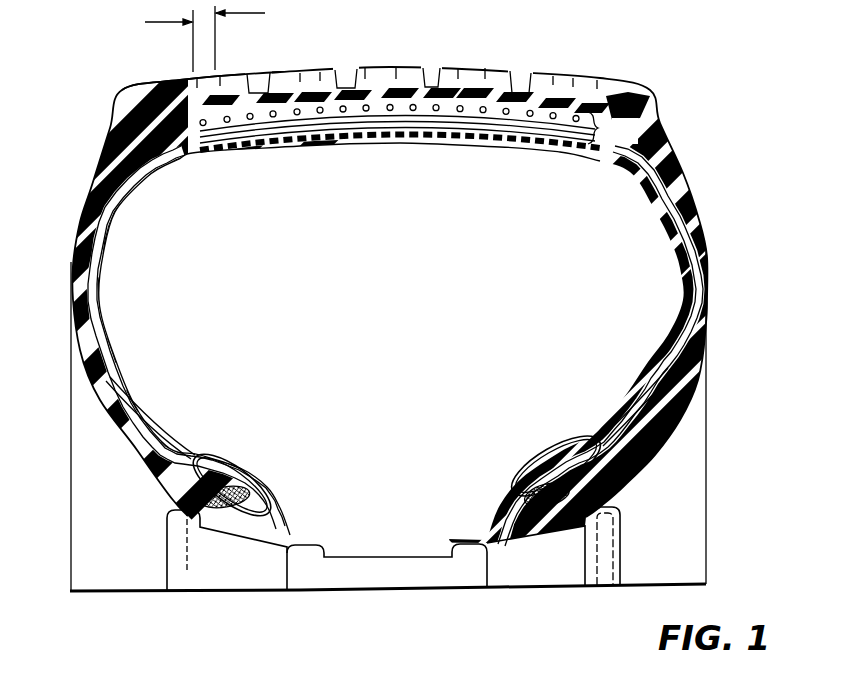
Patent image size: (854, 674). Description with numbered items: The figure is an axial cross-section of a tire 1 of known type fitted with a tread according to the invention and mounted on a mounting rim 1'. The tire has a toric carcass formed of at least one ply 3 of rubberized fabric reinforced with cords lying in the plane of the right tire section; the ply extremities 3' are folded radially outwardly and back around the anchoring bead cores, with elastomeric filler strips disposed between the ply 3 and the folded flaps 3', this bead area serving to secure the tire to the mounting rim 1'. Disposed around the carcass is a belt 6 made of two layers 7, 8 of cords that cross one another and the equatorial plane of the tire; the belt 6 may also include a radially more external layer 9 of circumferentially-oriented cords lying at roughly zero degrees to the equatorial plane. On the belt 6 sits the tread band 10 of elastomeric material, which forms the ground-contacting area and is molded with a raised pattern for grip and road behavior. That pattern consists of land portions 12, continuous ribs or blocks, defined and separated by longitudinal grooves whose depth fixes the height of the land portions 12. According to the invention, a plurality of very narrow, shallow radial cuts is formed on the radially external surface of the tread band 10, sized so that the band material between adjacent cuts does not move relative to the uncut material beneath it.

The tire 1 is at (389, 275).
The mounting rim 1' is at (388, 570).
The ply 3 is at (417, 344).
The ply extremities 3' is at (389, 413).
The belt 6 is at (628, 118).
The belt layer 7 is at (445, 128).
The belt layer 8 is at (524, 138).
The radially external layer 9 is at (384, 118).
The tread band 10 is at (157, 100).
The land portion 12 is at (300, 90).